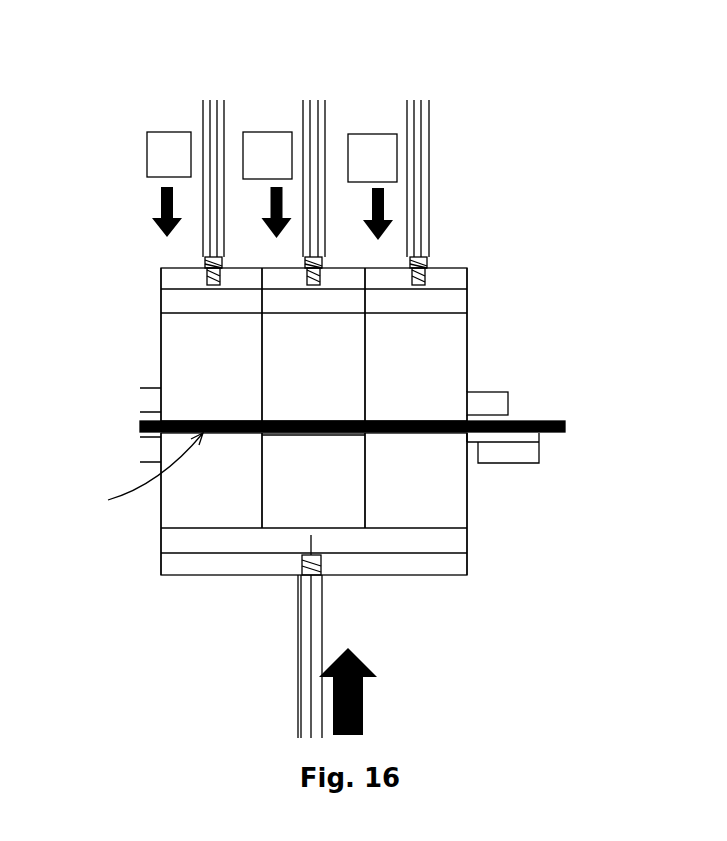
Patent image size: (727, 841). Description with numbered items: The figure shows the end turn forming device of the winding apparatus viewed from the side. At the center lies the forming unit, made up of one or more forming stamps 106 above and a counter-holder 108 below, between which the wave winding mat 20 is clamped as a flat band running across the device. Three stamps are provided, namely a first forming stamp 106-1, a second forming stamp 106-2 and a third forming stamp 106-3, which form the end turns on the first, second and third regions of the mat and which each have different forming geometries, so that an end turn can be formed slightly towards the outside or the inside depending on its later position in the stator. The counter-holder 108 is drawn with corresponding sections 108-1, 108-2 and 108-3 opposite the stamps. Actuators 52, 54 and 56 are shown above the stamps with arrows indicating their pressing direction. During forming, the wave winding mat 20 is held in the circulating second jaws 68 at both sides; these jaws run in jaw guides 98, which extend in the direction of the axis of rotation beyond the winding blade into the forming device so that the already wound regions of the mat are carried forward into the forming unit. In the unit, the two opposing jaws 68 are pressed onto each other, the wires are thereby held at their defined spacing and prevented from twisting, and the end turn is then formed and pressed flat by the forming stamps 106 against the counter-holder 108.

The wave winding mat 20 is at (548, 423).
The first valve 52 is at (383, 142).
The second valve 54 is at (273, 135).
The third valve 56 is at (158, 137).
The second jaw 68 is at (495, 403).
The jaw guide 98 is at (145, 398).
The forming stamp 106 is at (328, 308).
The first forming stamp 106-1 is at (448, 335).
The second forming stamp 106-2 is at (333, 346).
The third forming stamp 106-3 is at (183, 368).
The counter-holder 108 is at (333, 538).
The first lower channel section 108-1 is at (427, 513).
The second lower channel section 108-2 is at (293, 520).
The third lower channel section 108-3 is at (187, 493).